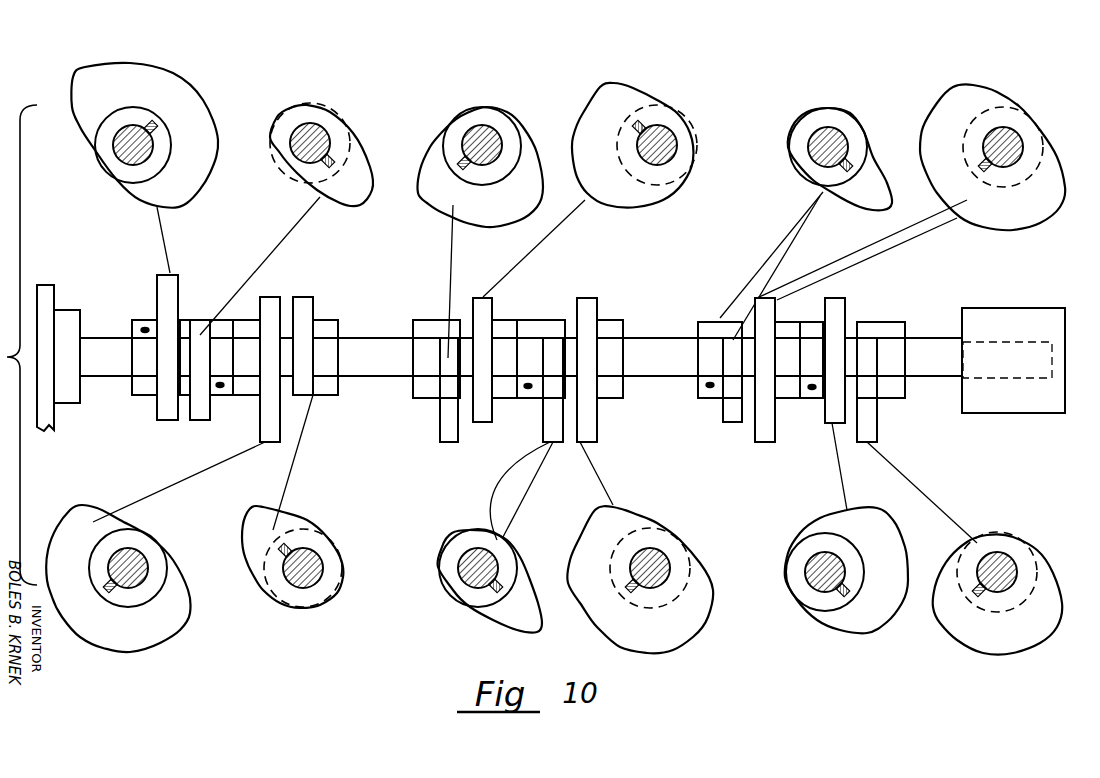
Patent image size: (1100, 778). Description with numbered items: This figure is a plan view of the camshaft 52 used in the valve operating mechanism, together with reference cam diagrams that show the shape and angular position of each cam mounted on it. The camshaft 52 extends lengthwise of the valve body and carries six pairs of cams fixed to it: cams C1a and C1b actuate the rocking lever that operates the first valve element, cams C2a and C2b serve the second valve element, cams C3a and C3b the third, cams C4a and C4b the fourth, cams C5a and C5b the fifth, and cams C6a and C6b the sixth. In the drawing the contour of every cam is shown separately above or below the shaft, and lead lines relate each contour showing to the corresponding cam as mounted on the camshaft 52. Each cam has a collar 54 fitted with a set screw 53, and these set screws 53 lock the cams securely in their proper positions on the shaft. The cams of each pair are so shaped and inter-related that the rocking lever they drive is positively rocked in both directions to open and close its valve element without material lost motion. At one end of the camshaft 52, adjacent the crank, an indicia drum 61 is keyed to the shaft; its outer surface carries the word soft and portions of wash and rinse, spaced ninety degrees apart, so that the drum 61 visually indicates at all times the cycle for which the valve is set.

The camshaft 52 is at (113, 150).
The set screws 53 is at (165, 128).
The collars 54 is at (150, 122).
The indicia drum 61 is at (1053, 325).
The cam C1a is at (160, 187).
The cam C1b is at (217, 320).
The cam C2a is at (262, 418).
The cam C2b is at (333, 350).
The cam C3a is at (448, 358).
The cam C3b is at (603, 183).
The cam C4a is at (500, 485).
The cam C4b is at (628, 527).
The cam C5a is at (862, 190).
The cam C5b is at (893, 217).
The cam C6a is at (812, 398).
The cam C6b is at (977, 543).